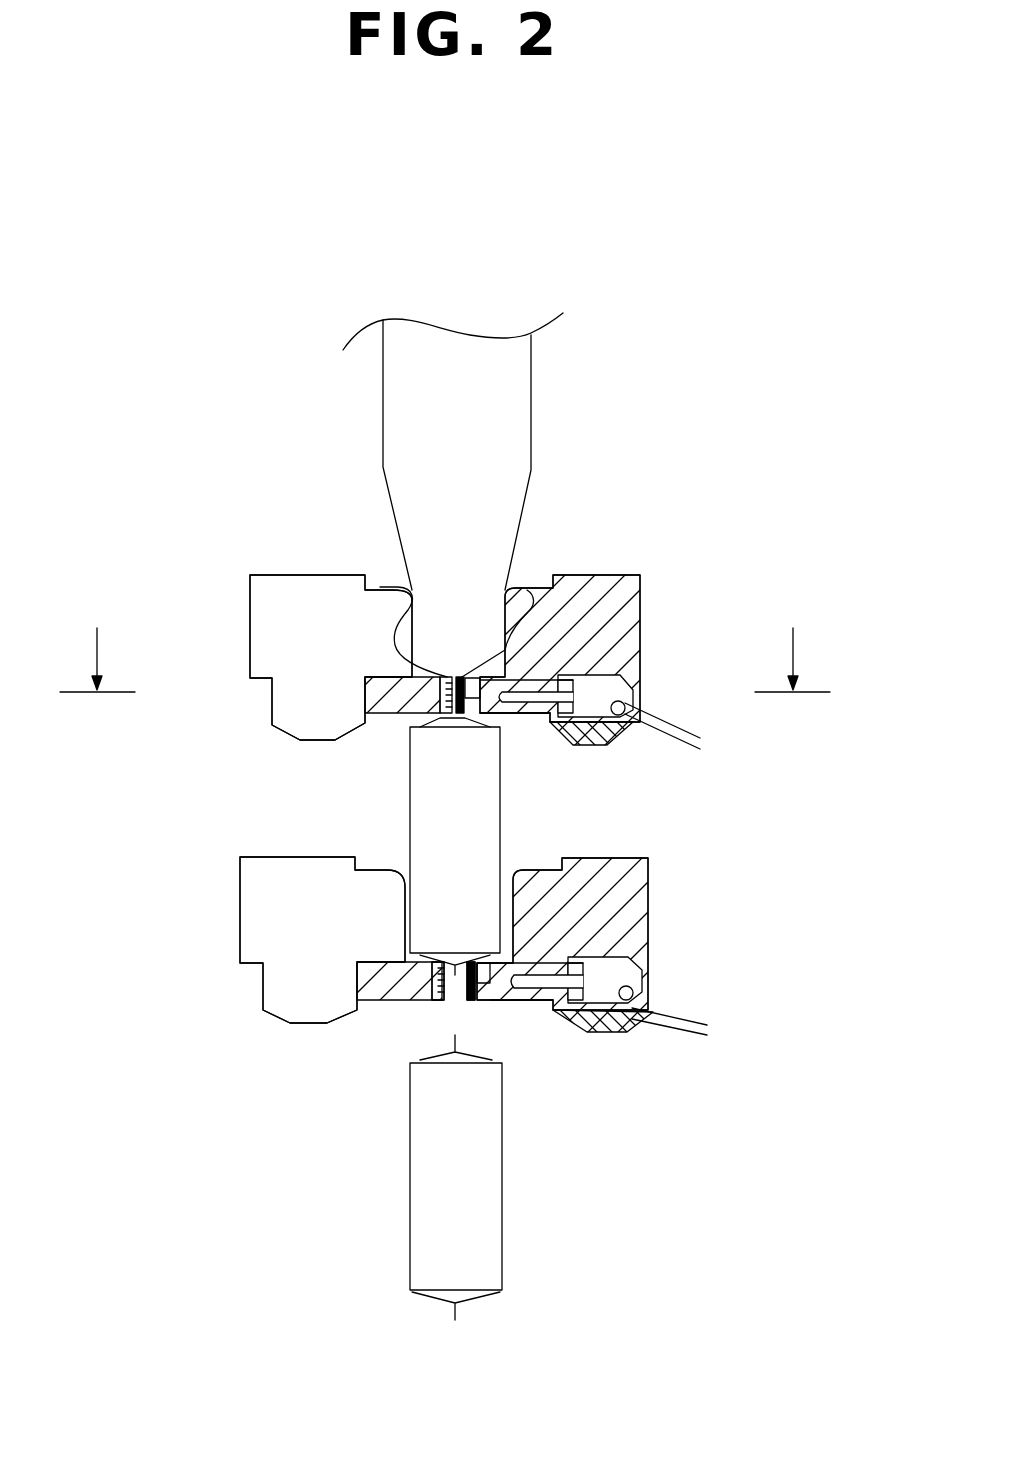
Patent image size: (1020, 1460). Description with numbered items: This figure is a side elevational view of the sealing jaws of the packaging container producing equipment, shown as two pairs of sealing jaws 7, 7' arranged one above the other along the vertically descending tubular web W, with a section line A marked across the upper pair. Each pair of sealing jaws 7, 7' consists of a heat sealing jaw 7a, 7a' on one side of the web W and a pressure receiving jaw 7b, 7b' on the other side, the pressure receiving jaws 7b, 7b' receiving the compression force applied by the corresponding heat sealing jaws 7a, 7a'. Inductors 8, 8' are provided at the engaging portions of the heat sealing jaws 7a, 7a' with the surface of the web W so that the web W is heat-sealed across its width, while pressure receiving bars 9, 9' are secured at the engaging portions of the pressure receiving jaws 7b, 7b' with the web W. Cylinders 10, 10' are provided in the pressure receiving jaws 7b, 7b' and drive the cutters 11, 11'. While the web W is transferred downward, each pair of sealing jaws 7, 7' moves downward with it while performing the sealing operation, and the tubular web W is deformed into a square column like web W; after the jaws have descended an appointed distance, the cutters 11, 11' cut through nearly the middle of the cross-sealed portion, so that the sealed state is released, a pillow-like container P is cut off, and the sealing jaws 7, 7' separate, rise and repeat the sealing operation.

The web W is at (531, 395).
The section line A- A is at (445, 642).
The sealing jaw 7 is at (402, 634).
The heat sealing jaw 7a is at (505, 665).
The pressure receiving jaw 7b is at (505, 664).
The inductor 8 is at (388, 596).
The pressure receiving bar 9 is at (543, 585).
The cylinder 10 is at (505, 699).
The cutter 11 is at (526, 744).
The pillow-like container P is at (422, 765).
The sealing jaw 7' is at (404, 937).
The heat sealing jaw 7a' is at (465, 945).
The pressure receiving jaw 7b' is at (495, 945).
The inductor 8' is at (363, 1041).
The pressure receiving bar 9' is at (508, 1041).
The cylinder 10' is at (495, 979).
The cutter 11' is at (567, 1059).